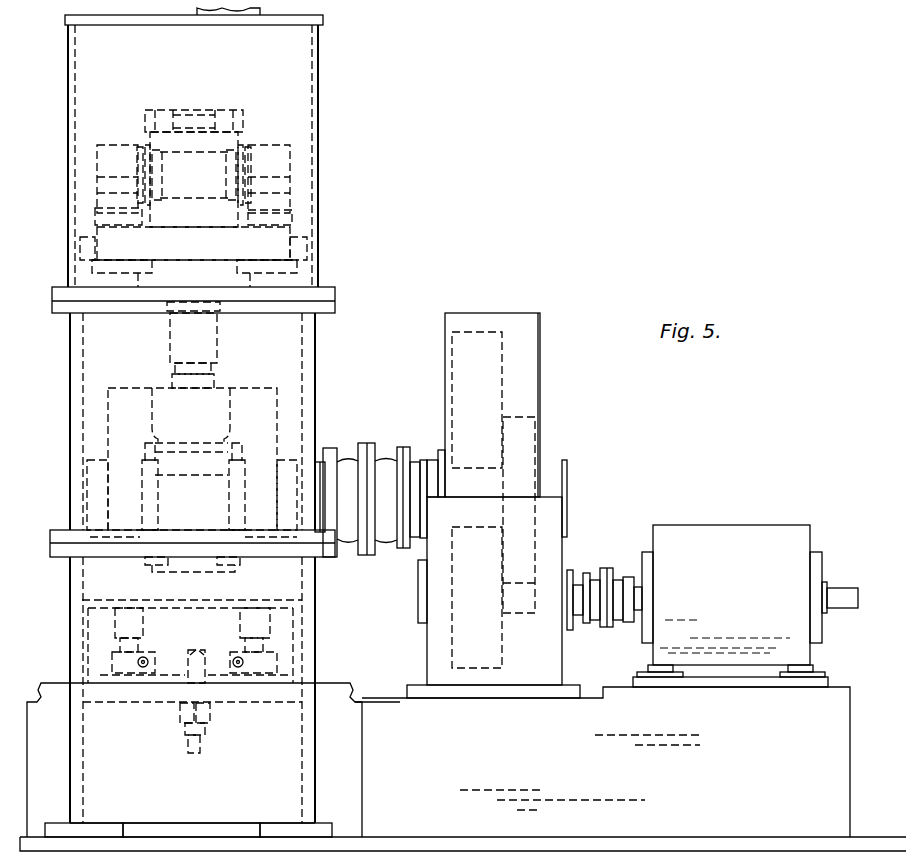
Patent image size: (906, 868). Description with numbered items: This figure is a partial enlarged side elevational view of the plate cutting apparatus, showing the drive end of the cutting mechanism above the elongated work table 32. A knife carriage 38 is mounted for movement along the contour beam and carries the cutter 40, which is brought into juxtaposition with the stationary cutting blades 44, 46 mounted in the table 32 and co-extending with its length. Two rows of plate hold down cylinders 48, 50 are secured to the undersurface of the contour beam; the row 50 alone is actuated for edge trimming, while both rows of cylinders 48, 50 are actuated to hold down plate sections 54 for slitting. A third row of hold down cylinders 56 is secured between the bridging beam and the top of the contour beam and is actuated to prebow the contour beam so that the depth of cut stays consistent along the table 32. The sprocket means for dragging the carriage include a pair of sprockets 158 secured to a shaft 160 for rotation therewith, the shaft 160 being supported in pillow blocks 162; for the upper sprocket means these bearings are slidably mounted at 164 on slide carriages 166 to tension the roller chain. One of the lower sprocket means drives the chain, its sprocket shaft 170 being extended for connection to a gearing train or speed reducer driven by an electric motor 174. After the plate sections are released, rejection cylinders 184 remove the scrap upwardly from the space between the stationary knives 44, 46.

The work table 32 is at (350, 704).
The knife carriage 38 is at (108, 428).
The cutter 40 is at (204, 642).
The cutting blade 44 is at (180, 724).
The cutting blade 46 is at (212, 724).
The plate hold down cylinders 48 is at (115, 628).
The plate hold down cylinders 50 is at (270, 621).
The plate sections 54 is at (57, 690).
The hold down cylinders 56 is at (216, 346).
The sprockets 158 is at (100, 178).
The shaft 160 is at (210, 156).
The pillow blocks 162 is at (100, 147).
The slidable mounting 164 is at (82, 258).
The slide carriages 166 is at (292, 220).
The sprocket shaft 170 is at (228, 452).
The electric motor 174 is at (733, 500).
The rejection cylinders 184 is at (186, 745).